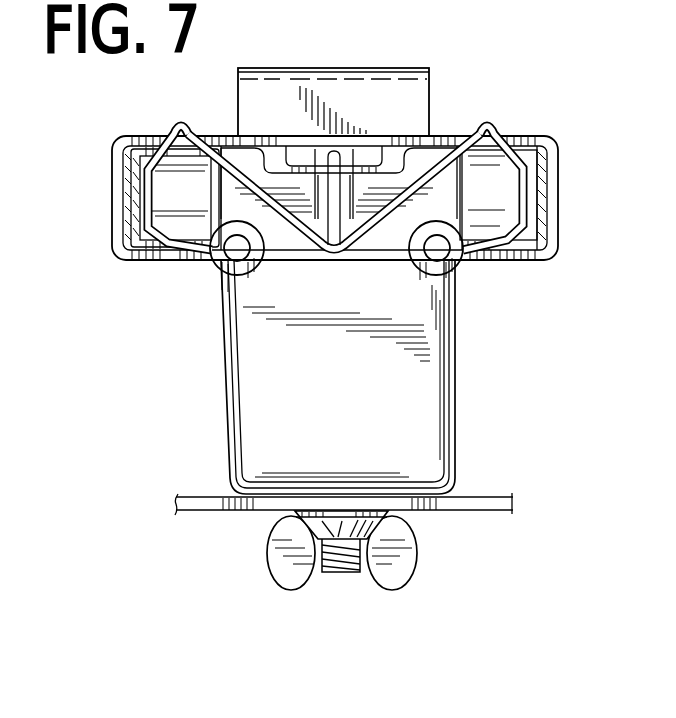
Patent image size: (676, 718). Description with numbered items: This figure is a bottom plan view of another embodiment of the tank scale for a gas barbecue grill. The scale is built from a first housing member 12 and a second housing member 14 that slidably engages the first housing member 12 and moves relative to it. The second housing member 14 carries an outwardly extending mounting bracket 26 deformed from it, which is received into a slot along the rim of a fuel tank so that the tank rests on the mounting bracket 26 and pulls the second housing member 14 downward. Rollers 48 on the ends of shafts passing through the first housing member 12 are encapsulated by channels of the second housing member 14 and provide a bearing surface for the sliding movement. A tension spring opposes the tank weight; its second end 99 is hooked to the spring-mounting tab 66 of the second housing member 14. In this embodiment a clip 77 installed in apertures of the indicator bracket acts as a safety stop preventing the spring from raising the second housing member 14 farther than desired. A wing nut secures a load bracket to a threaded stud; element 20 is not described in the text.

The first housing member 12 is at (223, 370).
The second housing member 14 is at (558, 153).
The mounting plate with wing nut 20 is at (484, 508).
The mounting bracket 26 is at (430, 96).
The roller 48 is at (115, 142).
The spring-mounting tab 66 is at (302, 155).
The clip 77 is at (462, 266).
The second end 99 is at (316, 240).